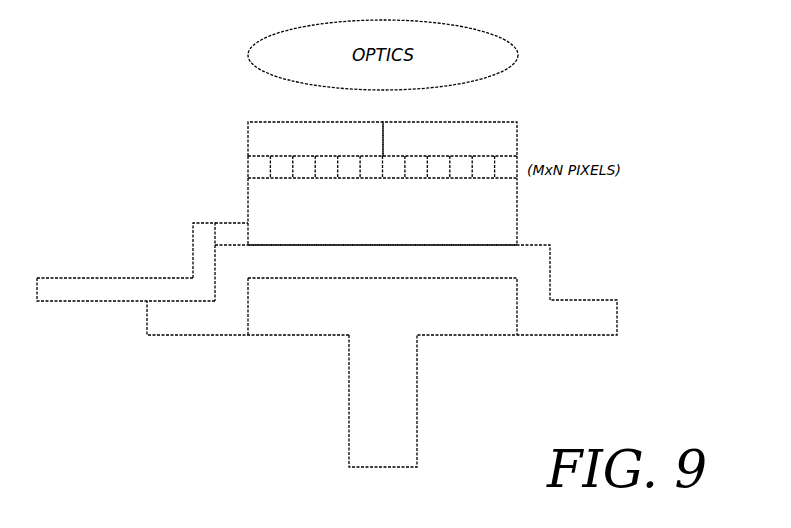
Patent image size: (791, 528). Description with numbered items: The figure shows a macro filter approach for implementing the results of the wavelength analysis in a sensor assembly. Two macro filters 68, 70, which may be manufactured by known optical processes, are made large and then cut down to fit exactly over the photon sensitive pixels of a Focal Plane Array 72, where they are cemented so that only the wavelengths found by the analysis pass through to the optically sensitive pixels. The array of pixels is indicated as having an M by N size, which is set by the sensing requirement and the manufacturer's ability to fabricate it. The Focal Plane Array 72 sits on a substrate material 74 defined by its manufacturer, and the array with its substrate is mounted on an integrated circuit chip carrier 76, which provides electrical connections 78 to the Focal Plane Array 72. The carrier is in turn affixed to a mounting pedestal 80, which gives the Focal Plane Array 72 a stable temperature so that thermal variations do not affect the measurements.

The macro filter 68 is at (282, 122).
The macro filter 70 is at (500, 122).
The Focal Plane Array (FPA) 72 is at (248, 169).
The substrate material 74 is at (517, 197).
The integrated circuit chip carrier 76 is at (575, 300).
The electrical connections 78 is at (98, 278).
The mounting pedestal 80 is at (323, 334).